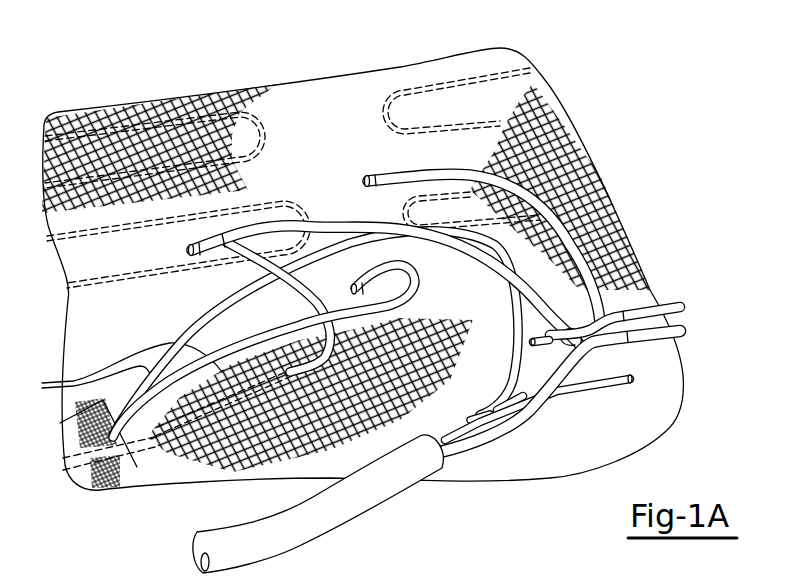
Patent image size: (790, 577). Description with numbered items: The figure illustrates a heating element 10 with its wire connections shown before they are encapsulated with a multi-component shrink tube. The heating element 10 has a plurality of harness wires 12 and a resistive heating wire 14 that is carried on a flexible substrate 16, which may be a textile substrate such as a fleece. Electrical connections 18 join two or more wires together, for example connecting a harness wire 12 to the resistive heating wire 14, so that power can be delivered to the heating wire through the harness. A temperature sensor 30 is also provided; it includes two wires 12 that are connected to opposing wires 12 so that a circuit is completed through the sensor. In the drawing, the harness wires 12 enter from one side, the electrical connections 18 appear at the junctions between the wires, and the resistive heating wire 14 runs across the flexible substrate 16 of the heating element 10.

The heating element 10 is at (608, 80).
The harness wires 12 is at (443, 173).
The resistive heating wire 14 is at (287, 130).
The flexible substrate 16 is at (330, 100).
The electrical connections 18 is at (377, 175).
The temperature sensor 30 is at (635, 378).